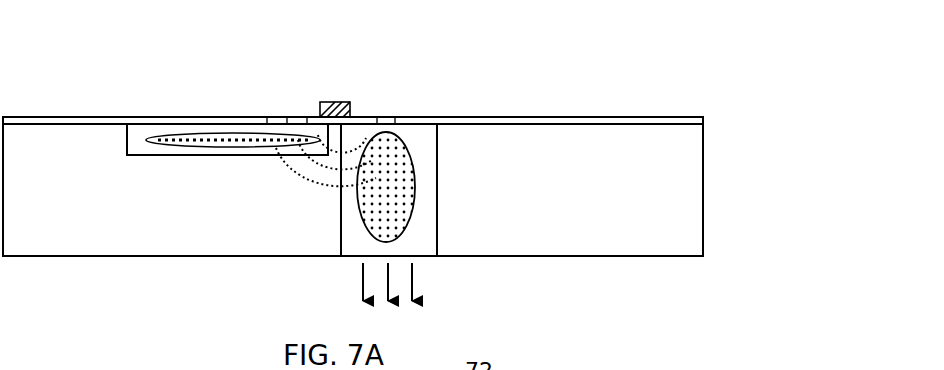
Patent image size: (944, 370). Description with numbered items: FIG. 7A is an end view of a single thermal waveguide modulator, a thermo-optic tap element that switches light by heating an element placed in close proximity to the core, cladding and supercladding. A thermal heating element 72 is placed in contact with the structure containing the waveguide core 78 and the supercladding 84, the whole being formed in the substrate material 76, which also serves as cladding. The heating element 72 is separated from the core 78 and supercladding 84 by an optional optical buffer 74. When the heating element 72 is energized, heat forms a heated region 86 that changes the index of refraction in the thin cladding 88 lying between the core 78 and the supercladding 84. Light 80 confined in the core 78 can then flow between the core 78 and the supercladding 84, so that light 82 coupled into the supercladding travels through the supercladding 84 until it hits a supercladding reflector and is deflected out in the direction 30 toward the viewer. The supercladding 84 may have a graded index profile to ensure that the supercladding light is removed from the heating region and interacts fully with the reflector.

The direction of light reflected out of supercladding to the viewer 30 is at (424, 278).
The heating element 72 is at (337, 100).
The optical buffer 74 is at (707, 117).
The substrate material 76 is at (710, 180).
The core 78 is at (137, 140).
The light confined in core 80 is at (226, 133).
The light coupled into supercladding 82 is at (393, 187).
The supercladding 84 is at (428, 132).
The heated region 86 is at (358, 140).
The thin cladding between core and supercladding 88 is at (331, 140).